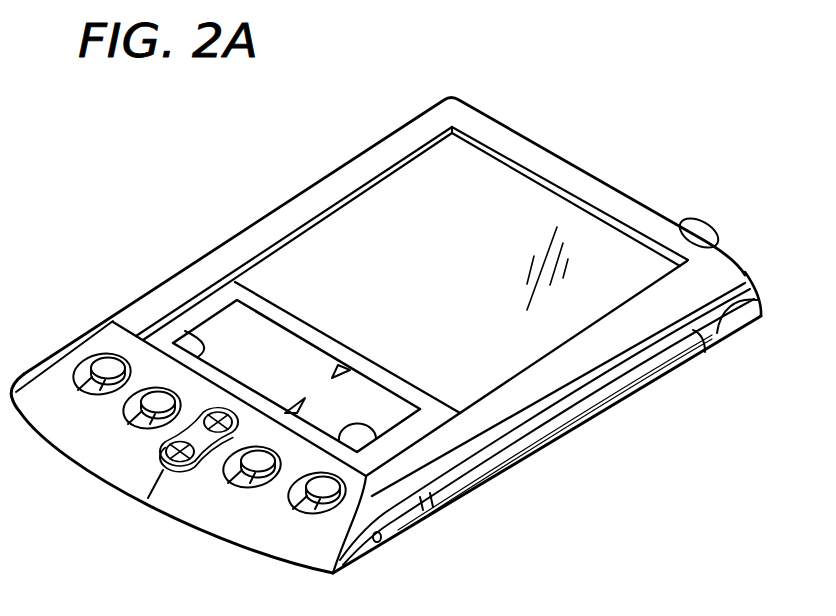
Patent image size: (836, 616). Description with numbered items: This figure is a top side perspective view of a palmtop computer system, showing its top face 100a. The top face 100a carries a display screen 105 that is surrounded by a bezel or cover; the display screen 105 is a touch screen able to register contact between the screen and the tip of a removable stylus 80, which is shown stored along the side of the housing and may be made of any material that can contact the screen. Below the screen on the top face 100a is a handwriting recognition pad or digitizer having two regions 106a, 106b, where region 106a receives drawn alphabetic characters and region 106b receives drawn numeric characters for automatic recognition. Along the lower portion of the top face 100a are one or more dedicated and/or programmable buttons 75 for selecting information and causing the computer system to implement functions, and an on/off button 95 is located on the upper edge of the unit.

The top face 100a is at (198, 117).
The display screen 105 is at (473, 201).
The region for alphabetic characters 106a is at (270, 348).
The region for numeric characters 106b is at (357, 405).
The on/off button 95 is at (704, 236).
The removable stylus 80 is at (577, 415).
The buttons 75 is at (105, 362).